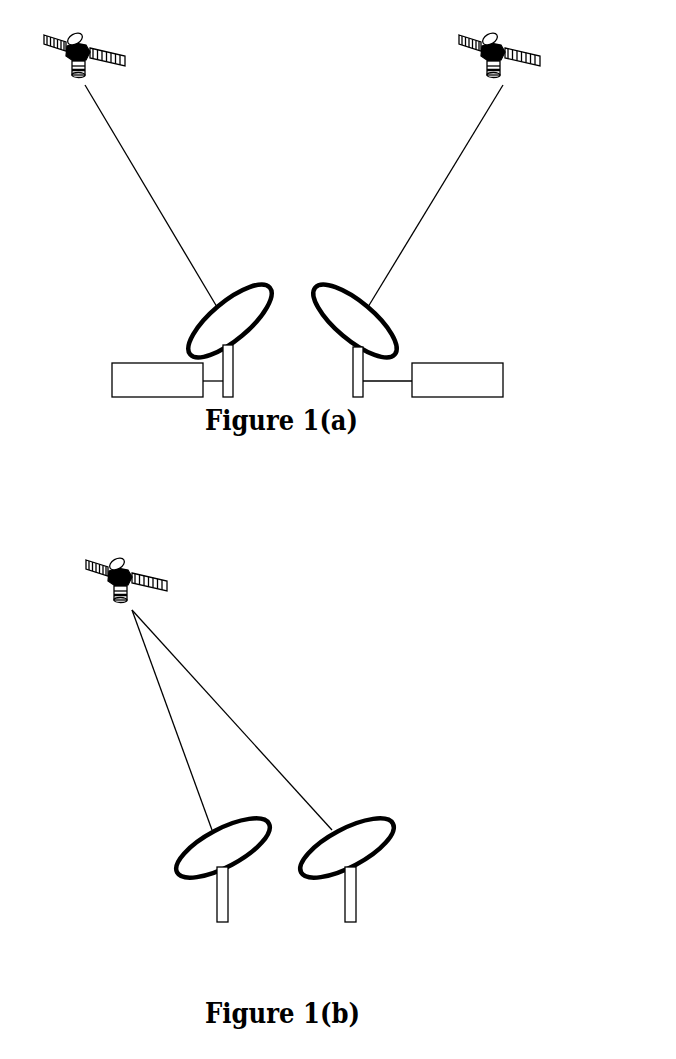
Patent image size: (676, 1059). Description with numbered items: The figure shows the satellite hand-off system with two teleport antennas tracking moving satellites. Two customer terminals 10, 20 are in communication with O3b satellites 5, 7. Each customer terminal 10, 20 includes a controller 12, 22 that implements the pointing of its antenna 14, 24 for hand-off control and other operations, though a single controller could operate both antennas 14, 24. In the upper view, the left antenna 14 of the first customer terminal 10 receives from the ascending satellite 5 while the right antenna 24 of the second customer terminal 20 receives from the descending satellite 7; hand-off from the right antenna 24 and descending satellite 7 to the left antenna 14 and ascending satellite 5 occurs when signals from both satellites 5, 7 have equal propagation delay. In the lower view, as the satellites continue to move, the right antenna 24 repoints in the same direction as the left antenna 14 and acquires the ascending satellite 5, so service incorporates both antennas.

In FIG. 1A, the ascending satellite 5 is at (127, 60).
In FIG. 1B, the ascending satellite 5 is at (170, 580).
In FIG. 1A, the descending satellite 7 is at (545, 60).
In FIG. 1A, the first customer terminal 10 is at (163, 313).
In FIG. 1A, the controller of first customer terminal 12 is at (112, 380).
In FIG. 1A, the left antenna 14 is at (248, 288).
In FIG. 1A, the second customer terminal 20 is at (437, 314).
In FIG. 1A, the controller of second customer terminal 22 is at (503, 378).
In FIG. 1A, the right antenna 24 is at (337, 283).